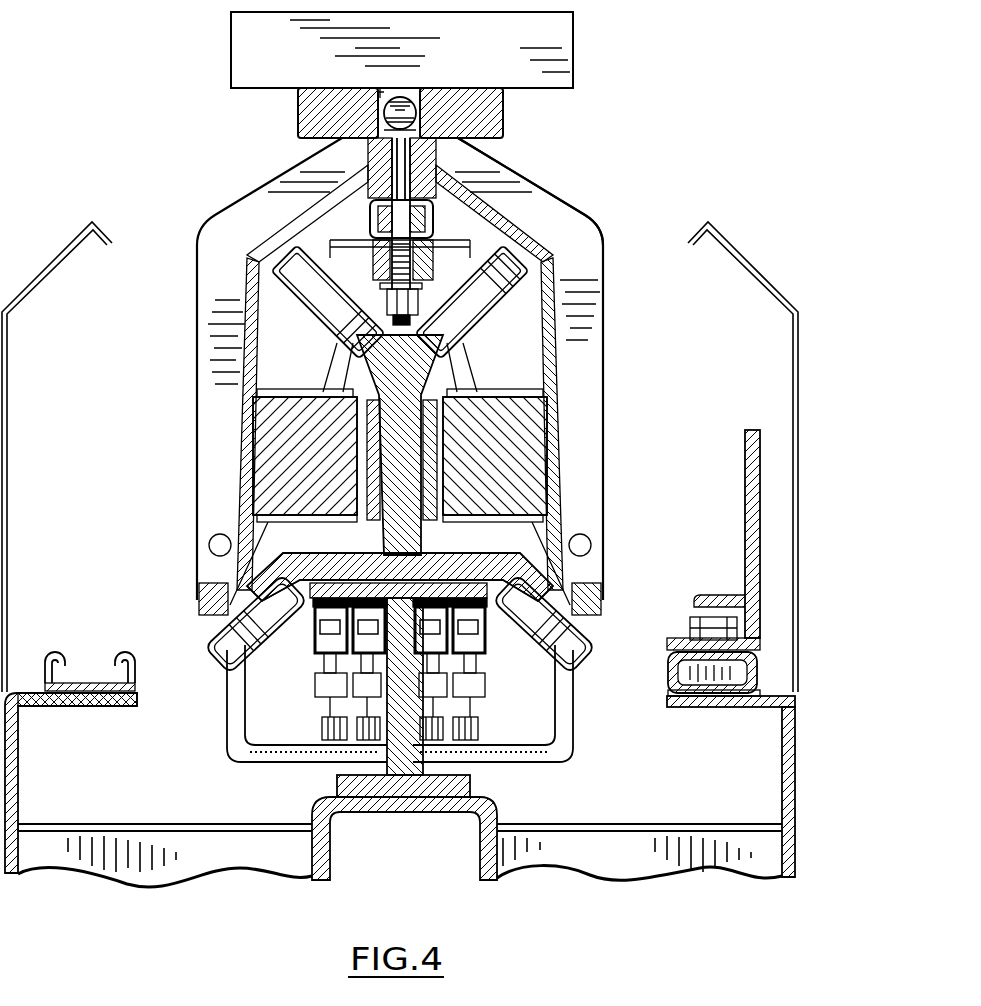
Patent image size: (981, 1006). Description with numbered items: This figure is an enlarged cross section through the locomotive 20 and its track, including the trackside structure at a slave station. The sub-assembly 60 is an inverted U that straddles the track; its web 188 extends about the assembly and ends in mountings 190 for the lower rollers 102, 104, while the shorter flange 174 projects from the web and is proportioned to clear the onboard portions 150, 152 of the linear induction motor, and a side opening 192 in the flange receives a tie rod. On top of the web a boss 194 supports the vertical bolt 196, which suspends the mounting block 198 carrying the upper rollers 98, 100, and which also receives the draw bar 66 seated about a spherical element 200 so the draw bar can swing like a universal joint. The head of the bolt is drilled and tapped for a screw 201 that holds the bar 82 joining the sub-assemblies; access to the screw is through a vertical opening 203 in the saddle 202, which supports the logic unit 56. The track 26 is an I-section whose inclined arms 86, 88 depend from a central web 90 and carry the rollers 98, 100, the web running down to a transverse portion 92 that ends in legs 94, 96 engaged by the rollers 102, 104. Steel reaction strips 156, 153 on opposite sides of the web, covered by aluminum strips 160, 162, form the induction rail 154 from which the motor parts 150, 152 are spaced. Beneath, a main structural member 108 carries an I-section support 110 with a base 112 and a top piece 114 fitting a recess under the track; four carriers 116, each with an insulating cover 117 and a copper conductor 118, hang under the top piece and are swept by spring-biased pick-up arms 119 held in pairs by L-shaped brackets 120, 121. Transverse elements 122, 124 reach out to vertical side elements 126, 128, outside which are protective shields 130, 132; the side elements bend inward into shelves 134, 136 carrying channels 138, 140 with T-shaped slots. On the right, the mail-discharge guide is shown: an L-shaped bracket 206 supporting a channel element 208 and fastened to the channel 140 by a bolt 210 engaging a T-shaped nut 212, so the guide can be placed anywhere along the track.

The assembly 20 is at (628, 102).
The cover assembly 26 is at (628, 186).
The logic unit 56 is at (573, 42).
The sub-assembly 60 is at (606, 325).
The draw bar 66 is at (378, 224).
The bar 82 is at (408, 100).
The arm 86 is at (333, 366).
The arm 88 is at (458, 366).
The central web 90 is at (430, 378).
The transverse portion 92 is at (368, 556).
The leg 94 is at (295, 535).
The leg 96 is at (515, 582).
The roller 98 is at (303, 302).
The roller 100 is at (485, 302).
The roller 102 is at (213, 640).
The roller 104 is at (588, 640).
The main structural member 108 is at (400, 812).
The I-section support 110 is at (420, 782).
The base 112 is at (370, 800).
The top piece 114 is at (340, 625).
The carrier 116 is at (335, 660).
The cover 117 is at (470, 660).
The copper conductor 118 is at (460, 625).
The pick-up arm 119 is at (350, 700).
The L-shaped bracket 120 is at (275, 748).
The L-shaped bracket 121 is at (540, 756).
The transverse element 122 is at (130, 826).
The transverse element 124 is at (630, 826).
The side element 126 is at (18, 772).
The side element 128 is at (782, 790).
The protective shield 130 is at (8, 352).
The protective shield 132 is at (792, 343).
The horizontal shelf 134 is at (90, 706).
The horizontal shelf 136 is at (718, 704).
The channel 138 is at (48, 655).
The channel 140 is at (668, 668).
The onboard portion of linear induction motor 150 is at (262, 420).
The onboard portion of linear induction motor 152 is at (540, 420).
The spacer 153 is at (425, 446).
The induction rail 154 is at (440, 524).
The steel reaction strip 156 is at (375, 435).
The aluminum strip 160 is at (368, 475).
The aluminum strip 162 is at (432, 480).
The flange 174 is at (577, 250).
The web 188 is at (568, 278).
The mounting 190 is at (207, 592).
The side opening 192 is at (216, 536).
The boss 194 is at (440, 147).
The vertical bolt 196 is at (378, 160).
The mounting block 198 is at (488, 222).
The spherical element 200 is at (372, 212).
The screw 201 is at (420, 95).
The saddle 202 is at (503, 108).
The vertical opening 203 is at (384, 90).
The L-shaped bracket 206 is at (745, 492).
The channel element 208 is at (735, 598).
The bolt 210 is at (705, 618).
The T-shaped nut 212 is at (700, 697).